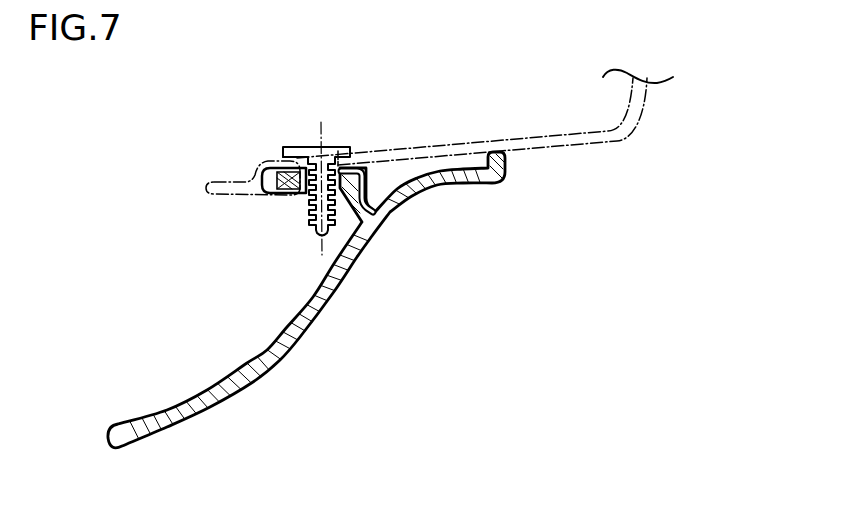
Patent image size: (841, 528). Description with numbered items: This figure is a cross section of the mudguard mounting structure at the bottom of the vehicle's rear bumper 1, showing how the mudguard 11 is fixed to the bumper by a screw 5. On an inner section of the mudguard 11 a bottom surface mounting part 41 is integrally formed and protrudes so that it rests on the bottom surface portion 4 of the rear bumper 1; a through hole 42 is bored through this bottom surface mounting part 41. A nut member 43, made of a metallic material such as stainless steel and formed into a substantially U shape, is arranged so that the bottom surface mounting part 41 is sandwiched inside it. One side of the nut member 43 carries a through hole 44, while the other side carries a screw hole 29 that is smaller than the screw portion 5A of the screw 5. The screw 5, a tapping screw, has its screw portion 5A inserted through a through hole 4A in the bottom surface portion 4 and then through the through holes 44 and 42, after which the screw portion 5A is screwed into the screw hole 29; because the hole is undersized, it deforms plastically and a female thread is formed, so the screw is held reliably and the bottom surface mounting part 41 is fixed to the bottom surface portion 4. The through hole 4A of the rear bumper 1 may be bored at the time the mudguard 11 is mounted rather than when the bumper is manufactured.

The rear bumper 1 is at (643, 110).
The bottom surface portion 4 is at (575, 148).
The through hole 4A is at (344, 160).
The screw 5 is at (323, 146).
The screw portion 5A is at (362, 256).
The mudguard 11 is at (200, 410).
The screw hole 29 is at (305, 190).
The bottom surface mounting part 41 is at (280, 197).
The through hole 42 is at (354, 166).
The nut member 43 is at (255, 170).
The through hole 44 is at (289, 146).